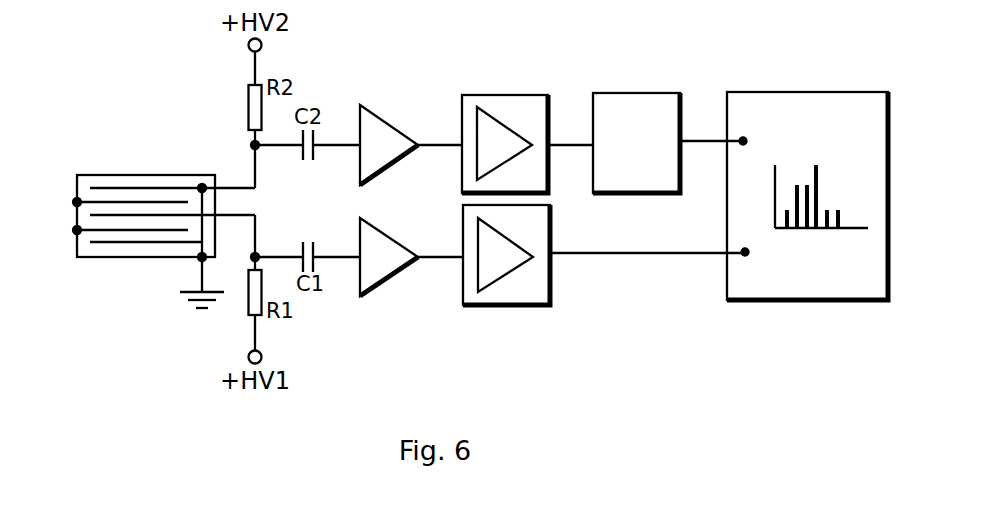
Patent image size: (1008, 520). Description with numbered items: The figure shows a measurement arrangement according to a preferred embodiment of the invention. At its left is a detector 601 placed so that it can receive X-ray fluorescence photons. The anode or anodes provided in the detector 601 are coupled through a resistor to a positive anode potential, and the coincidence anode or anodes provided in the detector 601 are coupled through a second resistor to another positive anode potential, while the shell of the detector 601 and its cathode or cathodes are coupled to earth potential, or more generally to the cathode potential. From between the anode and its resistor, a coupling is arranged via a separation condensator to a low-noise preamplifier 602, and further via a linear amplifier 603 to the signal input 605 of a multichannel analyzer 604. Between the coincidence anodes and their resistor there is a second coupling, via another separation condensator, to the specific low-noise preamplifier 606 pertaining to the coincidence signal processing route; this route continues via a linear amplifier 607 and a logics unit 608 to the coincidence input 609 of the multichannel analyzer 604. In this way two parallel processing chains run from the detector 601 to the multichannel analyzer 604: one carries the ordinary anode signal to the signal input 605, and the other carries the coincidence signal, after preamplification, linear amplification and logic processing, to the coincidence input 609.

The detector 601 is at (74, 243).
The low-noise preamplifier 602 is at (360, 273).
The linear amplifier 603 is at (463, 290).
The multichannel analyzer 604 is at (726, 287).
The signal input 605 is at (745, 252).
The low-noise preamplifier 606 is at (361, 153).
The linear amplifier 607 is at (462, 155).
The logics unit 608 is at (593, 168).
The coincidence input 609 is at (743, 141).